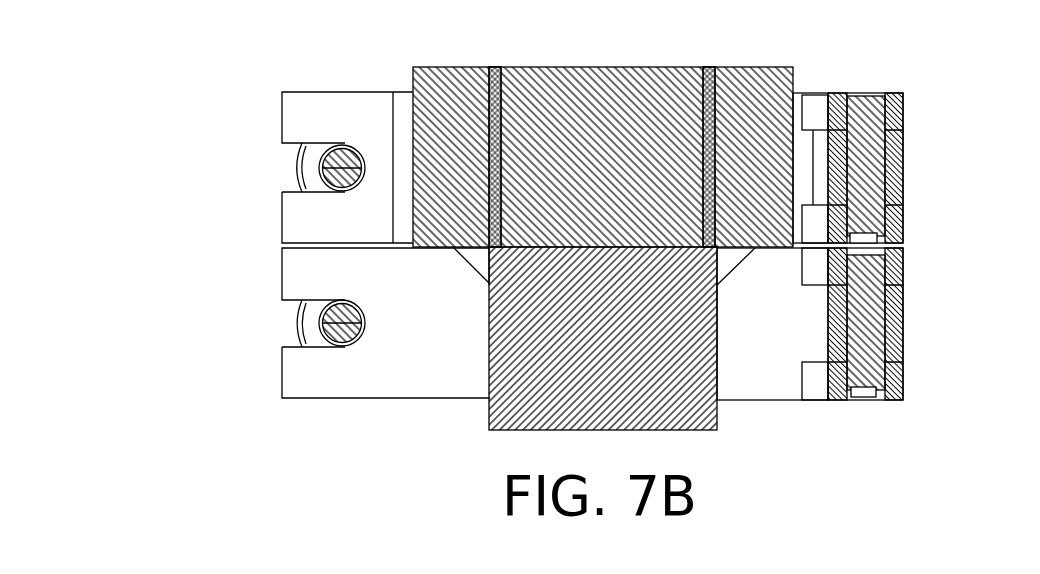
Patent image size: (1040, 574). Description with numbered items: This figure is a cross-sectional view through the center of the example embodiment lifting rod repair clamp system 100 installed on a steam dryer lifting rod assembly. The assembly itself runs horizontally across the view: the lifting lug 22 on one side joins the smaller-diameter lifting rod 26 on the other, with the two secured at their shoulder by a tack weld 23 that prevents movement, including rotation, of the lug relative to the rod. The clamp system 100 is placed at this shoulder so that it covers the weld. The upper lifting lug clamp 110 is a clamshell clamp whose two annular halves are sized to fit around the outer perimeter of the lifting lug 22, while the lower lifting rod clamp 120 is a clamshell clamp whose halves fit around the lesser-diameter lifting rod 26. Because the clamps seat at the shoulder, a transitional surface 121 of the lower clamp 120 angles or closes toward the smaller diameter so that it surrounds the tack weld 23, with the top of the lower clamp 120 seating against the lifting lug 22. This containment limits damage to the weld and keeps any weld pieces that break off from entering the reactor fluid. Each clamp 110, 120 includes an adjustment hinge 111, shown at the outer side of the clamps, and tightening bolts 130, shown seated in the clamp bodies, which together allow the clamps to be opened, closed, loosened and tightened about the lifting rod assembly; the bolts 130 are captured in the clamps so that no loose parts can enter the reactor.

The lifting rod repair clamp system 100 is at (221, 260).
The upper lifting lug clamp 110 is at (332, 120).
The lower lifting rod clamp 120 is at (325, 373).
The tightening bolts 130 is at (323, 169).
The lifting lug 22 is at (758, 91).
The tack weld 23 is at (461, 256).
The lifting rod 26 is at (677, 405).
The adjustment hinge 111 is at (872, 168).
The transitional surface 121 is at (466, 252).